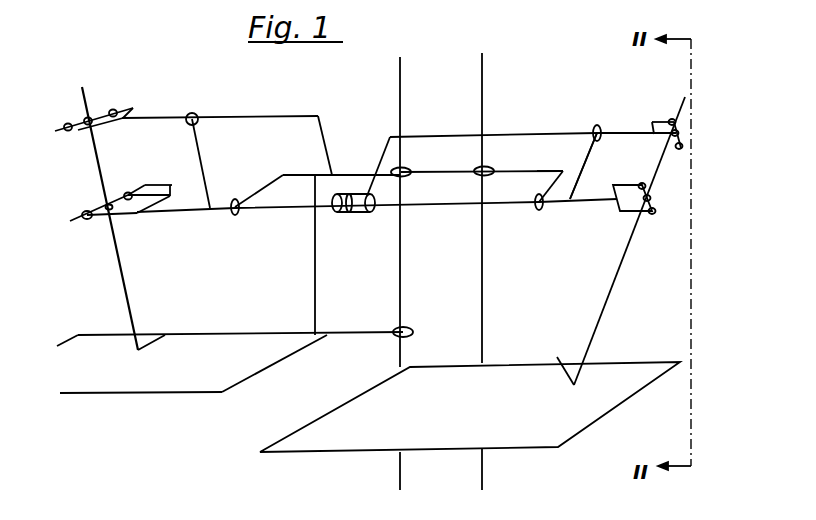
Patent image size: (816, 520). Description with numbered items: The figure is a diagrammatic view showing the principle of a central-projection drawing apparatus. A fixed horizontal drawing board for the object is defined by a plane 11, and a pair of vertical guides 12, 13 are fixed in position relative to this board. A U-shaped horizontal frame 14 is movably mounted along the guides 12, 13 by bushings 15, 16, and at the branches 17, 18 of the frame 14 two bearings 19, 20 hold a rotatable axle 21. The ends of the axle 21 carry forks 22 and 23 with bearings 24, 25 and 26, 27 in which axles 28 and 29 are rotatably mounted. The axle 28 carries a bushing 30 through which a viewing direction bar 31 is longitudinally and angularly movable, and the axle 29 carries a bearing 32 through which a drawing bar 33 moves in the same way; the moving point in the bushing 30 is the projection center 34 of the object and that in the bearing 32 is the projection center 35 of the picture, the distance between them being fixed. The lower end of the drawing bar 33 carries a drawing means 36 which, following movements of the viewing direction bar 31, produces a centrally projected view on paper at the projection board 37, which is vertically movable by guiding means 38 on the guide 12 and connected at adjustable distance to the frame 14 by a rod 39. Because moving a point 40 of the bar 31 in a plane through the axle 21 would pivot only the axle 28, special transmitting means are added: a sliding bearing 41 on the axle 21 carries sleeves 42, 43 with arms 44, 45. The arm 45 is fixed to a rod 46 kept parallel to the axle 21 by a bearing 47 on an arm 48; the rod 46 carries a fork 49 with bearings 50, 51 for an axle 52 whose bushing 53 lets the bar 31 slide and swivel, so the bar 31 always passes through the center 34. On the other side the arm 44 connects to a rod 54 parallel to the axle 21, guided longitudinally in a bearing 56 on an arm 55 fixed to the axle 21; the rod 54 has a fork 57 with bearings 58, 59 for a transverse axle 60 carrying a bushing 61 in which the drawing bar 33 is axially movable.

The plane 11 is at (530, 435).
The vertical guide 12 is at (403, 308).
The vertical guide 13 is at (484, 306).
The U-shaped horizontal frame 14 is at (339, 193).
The bushing 15 is at (407, 168).
The bushing 16 is at (488, 167).
The branch 17 is at (278, 177).
The branch 18 is at (549, 183).
The bearing 19 is at (238, 215).
The bearing 20 is at (541, 210).
The axle 21 is at (445, 205).
The fork 22 is at (641, 183).
The fork 23 is at (135, 217).
The bearing 24 is at (82, 214).
The bearing 25 is at (127, 193).
The bearing 26 is at (651, 195).
The bearing 27 is at (656, 211).
The axle 28 is at (655, 213).
The axle 29 is at (161, 188).
The bushing 30 is at (652, 200).
The viewing direction bar 31 is at (608, 308).
The bearing 32 is at (107, 205).
The drawing bar 33 is at (128, 293).
The projection center of the object 34 is at (642, 203).
The projection center of the picture 35 is at (108, 212).
The drawing means 36 is at (167, 335).
The projection board 37 is at (197, 382).
The guiding means 38 is at (412, 330).
The rod 39 is at (317, 300).
The point of the bar 40 is at (558, 362).
The sliding bearing 41 is at (363, 194).
The sleeve 42 is at (340, 213).
The sleeve 43 is at (364, 213).
The arm 44 is at (321, 117).
The arm 45 is at (387, 158).
The rod 46 is at (572, 133).
The bearing 47 is at (600, 124).
The arm 48 is at (580, 180).
The fork 49 is at (652, 121).
The bearing 50 is at (676, 120).
The bearing 51 is at (677, 149).
The axle 52 is at (671, 119).
The bushing 53 is at (674, 136).
The rod 54 is at (280, 116).
The arm 55 is at (204, 172).
The bearing 56 is at (193, 112).
The fork 57 is at (134, 107).
The bearing 58 is at (68, 123).
The bearing 59 is at (114, 109).
The transverse axle 60 is at (119, 84).
The bushing 61 is at (89, 117).